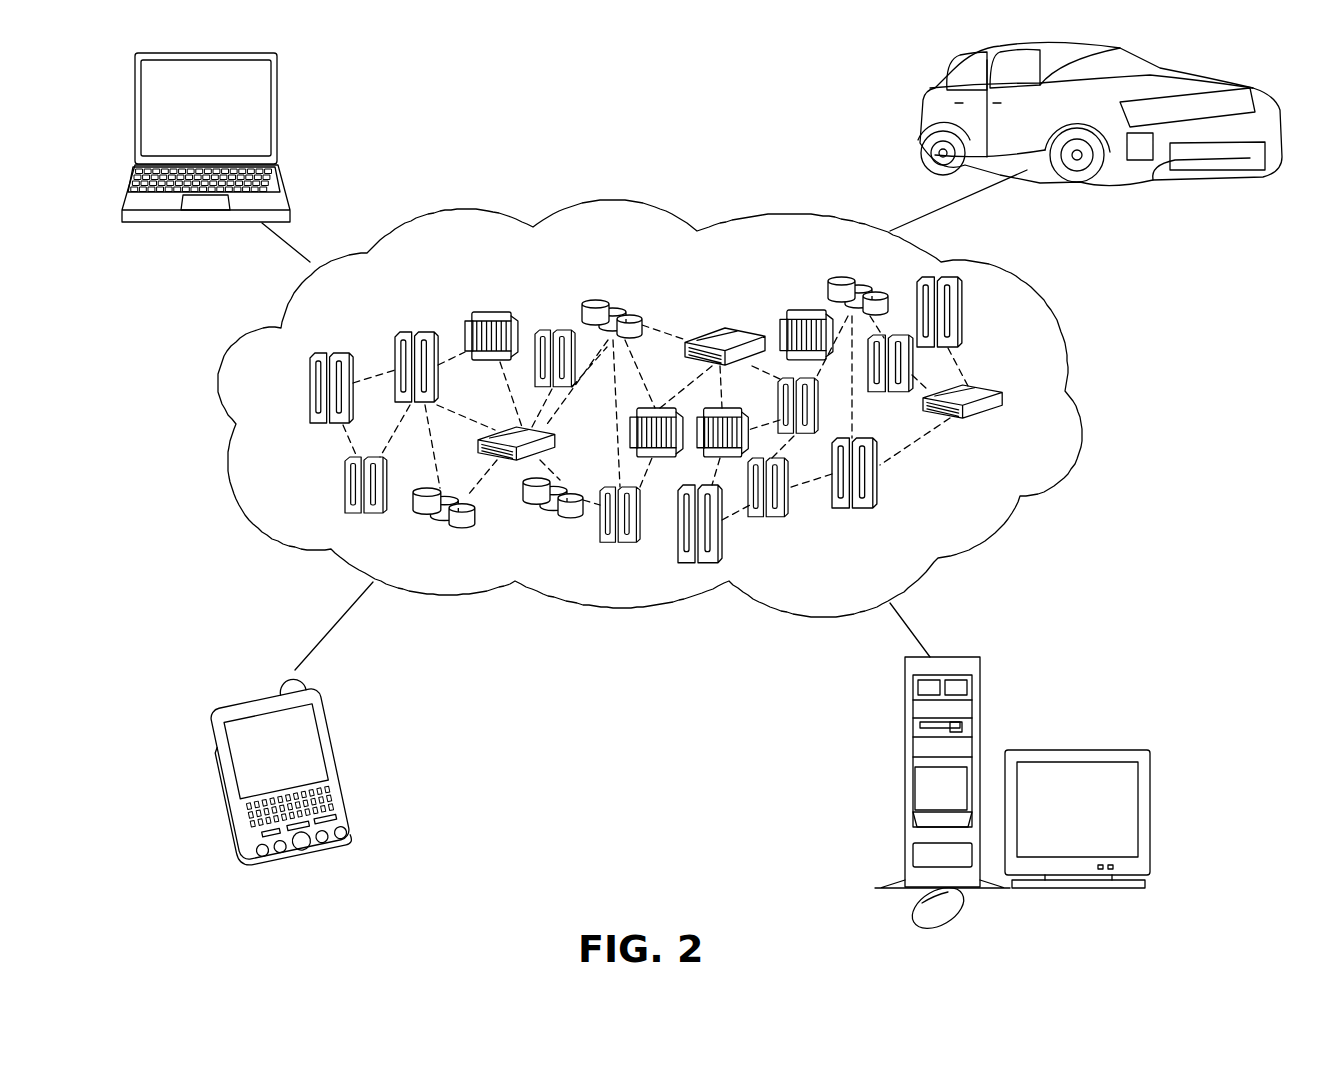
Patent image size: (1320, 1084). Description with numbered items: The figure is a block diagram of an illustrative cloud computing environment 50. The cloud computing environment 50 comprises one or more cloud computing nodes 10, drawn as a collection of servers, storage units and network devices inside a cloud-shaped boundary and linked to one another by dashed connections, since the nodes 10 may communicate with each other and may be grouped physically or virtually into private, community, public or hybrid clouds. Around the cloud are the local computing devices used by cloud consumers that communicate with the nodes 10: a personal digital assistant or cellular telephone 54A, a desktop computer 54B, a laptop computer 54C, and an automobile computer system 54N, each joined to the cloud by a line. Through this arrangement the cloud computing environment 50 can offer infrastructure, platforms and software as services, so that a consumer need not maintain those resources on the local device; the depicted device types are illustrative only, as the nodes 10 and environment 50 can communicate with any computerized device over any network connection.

The cloud computing environment 50 is at (1073, 400).
The cloud computing node 10 is at (983, 504).
The personal digital assistant (PDA) or cellular telephone 54A is at (332, 730).
The desktop computer 54B is at (902, 717).
The laptop computer 54C is at (291, 88).
The automobile computer system 54N is at (920, 110).